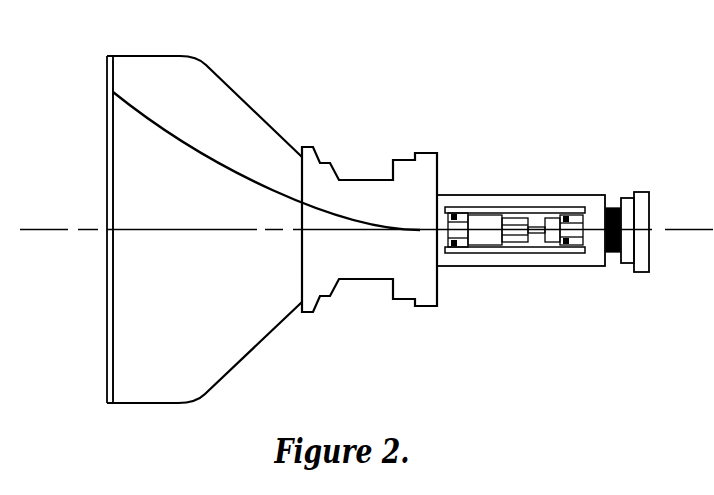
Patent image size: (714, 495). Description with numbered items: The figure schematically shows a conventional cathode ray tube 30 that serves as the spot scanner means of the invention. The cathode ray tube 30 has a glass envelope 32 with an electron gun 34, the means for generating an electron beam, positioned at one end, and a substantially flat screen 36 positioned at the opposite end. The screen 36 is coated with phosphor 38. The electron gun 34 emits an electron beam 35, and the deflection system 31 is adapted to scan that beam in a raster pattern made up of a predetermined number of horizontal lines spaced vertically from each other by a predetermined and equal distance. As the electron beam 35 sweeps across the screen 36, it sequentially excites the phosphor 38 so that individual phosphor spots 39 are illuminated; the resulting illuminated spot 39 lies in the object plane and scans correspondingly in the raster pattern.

The cathode ray tube 30 is at (381, 90).
The deflection system 31 is at (378, 285).
The glass envelope 32 is at (238, 100).
The electron gun 34 is at (545, 205).
The electron beam 35 is at (221, 173).
The screen 36 is at (107, 202).
The phosphor 38 is at (113, 263).
The phosphor spot 39 is at (114, 92).